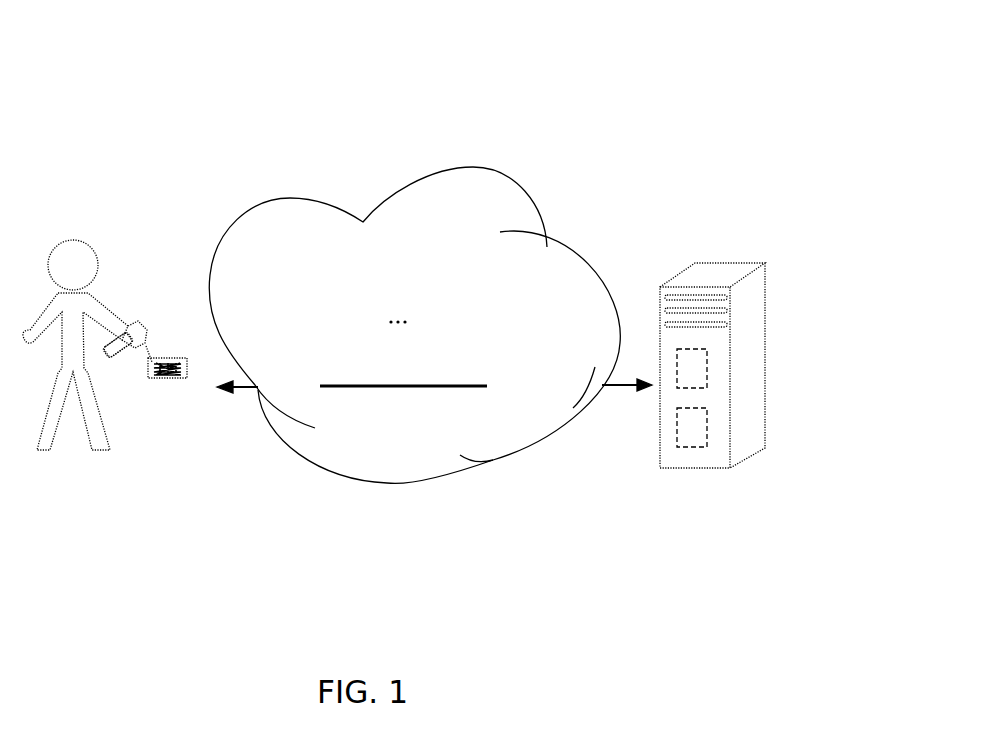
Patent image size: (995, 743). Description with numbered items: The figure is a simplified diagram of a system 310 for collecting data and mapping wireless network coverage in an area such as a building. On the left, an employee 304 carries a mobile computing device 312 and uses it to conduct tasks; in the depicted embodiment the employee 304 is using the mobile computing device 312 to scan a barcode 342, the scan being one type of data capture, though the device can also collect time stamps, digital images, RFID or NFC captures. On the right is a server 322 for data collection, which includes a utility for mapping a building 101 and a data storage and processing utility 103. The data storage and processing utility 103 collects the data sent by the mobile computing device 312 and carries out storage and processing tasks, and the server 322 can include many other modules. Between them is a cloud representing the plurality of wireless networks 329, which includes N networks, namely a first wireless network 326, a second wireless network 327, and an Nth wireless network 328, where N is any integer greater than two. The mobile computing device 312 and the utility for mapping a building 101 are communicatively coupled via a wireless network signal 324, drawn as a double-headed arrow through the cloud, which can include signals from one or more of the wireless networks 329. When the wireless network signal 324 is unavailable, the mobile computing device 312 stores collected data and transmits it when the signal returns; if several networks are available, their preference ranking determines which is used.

The system 310 is at (587, 110).
The employee 304 is at (73, 250).
The mobile computing device 312 is at (128, 327).
The barcode 342 is at (172, 379).
The plurality of wireless networks 329 is at (555, 228).
The wireless network 1 326 is at (395, 251).
The wireless network 2 327 is at (395, 278).
The wireless network N 328 is at (398, 348).
The wireless network signal 324 is at (430, 388).
The server 322 is at (713, 273).
The data storage and processing utility 103 is at (697, 365).
The utility for mapping a building 101 is at (687, 430).